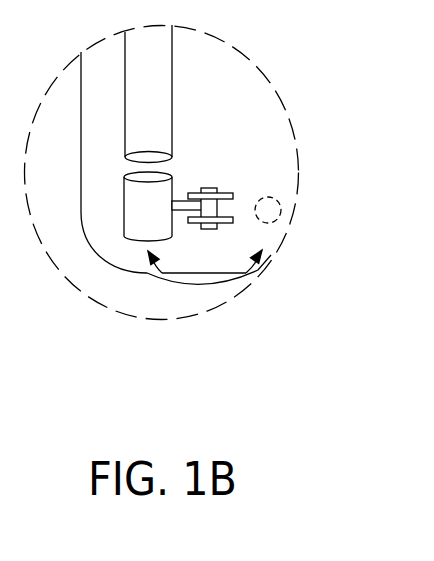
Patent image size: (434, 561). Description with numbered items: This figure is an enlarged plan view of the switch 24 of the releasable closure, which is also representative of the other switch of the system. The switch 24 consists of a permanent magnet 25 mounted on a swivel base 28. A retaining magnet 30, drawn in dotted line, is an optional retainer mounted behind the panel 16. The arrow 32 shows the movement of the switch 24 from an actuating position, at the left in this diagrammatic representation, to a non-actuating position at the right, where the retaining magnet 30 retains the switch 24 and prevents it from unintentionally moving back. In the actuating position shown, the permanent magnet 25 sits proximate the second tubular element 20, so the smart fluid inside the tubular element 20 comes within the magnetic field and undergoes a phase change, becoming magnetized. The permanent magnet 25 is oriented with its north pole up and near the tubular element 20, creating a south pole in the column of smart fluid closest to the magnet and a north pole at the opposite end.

The panel 16 is at (81, 97).
The second tubular element 20 is at (172, 55).
The switch 24 is at (123, 200).
The permanent magnet 25 is at (132, 241).
The swivel base 28 is at (209, 188).
The retaining magnet 30 is at (268, 197).
The arrow 32 is at (203, 284).